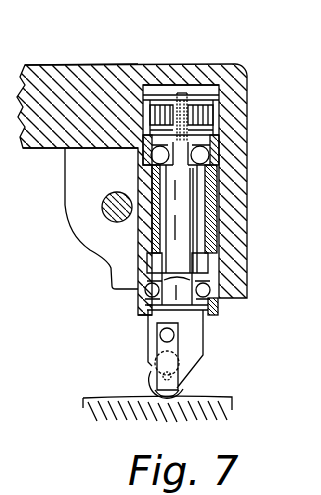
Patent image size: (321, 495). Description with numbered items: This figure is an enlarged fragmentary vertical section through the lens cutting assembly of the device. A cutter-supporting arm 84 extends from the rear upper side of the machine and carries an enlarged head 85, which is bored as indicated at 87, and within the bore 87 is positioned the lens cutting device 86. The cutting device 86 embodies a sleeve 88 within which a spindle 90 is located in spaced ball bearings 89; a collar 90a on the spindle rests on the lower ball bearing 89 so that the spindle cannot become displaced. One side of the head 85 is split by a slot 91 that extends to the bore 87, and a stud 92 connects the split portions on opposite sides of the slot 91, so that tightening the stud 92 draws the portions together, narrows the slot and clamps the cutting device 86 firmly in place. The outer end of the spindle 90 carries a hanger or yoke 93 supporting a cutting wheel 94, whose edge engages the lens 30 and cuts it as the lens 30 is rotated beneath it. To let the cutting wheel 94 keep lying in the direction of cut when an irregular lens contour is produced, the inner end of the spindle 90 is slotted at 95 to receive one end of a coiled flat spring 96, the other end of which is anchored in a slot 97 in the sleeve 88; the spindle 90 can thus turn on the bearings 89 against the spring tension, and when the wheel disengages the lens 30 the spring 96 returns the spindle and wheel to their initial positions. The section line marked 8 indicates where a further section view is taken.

The cutter-supporting arm 84 is at (37, 64).
The head 85 is at (240, 217).
The lens cutting device 86 is at (134, 306).
The bore 87 is at (207, 96).
The sleeve 88 is at (212, 200).
The ball bearings 89 is at (212, 157).
The spindle 90 is at (188, 235).
The collar 90a is at (214, 266).
The slot 91 is at (70, 212).
The stud 92 is at (110, 199).
The hanger or yoke 93 is at (197, 352).
The cutting wheel 94 is at (175, 391).
The slot 95 is at (181, 92).
The coiled flat spring 96 is at (221, 120).
The slot 97 is at (222, 108).
The lens 30 is at (234, 407).
The section line 8 is at (129, 104).